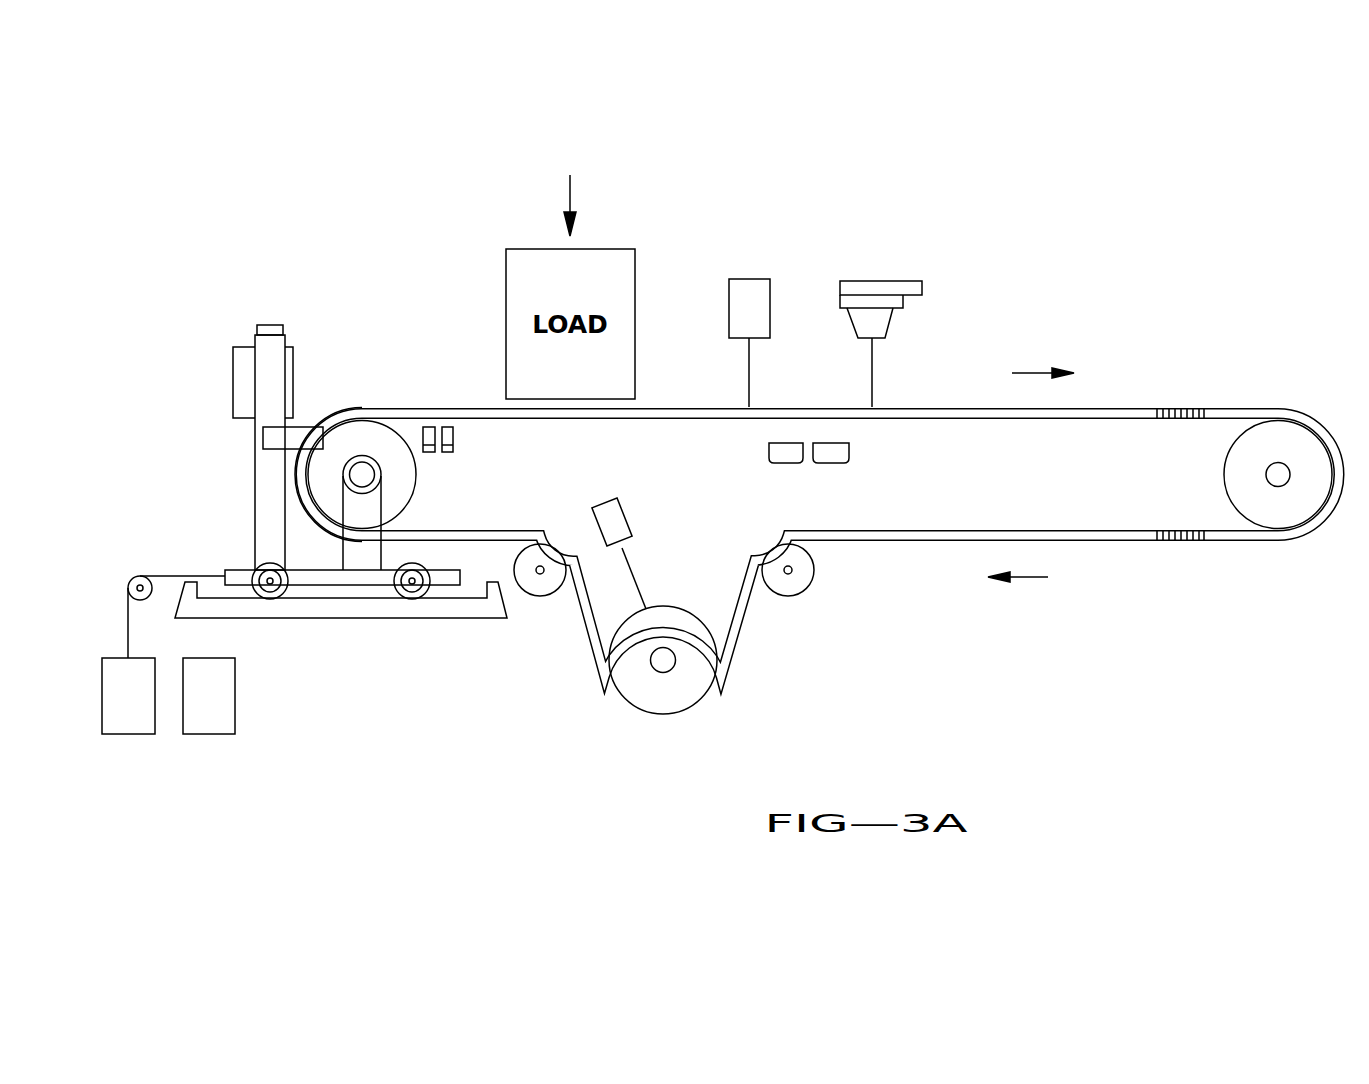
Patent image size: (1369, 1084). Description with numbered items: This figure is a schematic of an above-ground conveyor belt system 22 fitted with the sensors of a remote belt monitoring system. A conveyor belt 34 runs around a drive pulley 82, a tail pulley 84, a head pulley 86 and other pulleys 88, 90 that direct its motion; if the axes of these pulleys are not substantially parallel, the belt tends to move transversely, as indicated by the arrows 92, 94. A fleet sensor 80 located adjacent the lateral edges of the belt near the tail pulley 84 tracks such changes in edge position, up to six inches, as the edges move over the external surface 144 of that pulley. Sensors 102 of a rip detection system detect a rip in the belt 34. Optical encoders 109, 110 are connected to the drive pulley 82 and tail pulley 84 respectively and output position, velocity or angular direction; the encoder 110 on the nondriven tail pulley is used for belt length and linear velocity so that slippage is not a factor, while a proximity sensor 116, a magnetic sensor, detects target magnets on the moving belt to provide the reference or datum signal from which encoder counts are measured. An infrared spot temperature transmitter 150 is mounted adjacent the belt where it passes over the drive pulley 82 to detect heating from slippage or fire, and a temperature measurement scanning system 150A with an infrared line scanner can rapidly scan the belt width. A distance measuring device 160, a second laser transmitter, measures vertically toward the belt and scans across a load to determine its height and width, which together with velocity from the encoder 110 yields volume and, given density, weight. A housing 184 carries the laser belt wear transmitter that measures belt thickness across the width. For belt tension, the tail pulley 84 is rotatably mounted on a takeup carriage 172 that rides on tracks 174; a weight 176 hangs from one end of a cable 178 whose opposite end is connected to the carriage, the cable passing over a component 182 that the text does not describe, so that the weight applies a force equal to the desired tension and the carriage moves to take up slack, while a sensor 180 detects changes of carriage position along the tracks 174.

The conveyor belt system 22 is at (243, 258).
The conveyor belt 34 is at (1133, 407).
The fleet sensor 80 is at (315, 436).
The drive pulley 82 is at (695, 611).
The tail pulley 84 is at (368, 437).
The head pulley 86 is at (1308, 427).
The pulley 88 is at (533, 596).
The pulley 90 is at (810, 588).
The arrow 92 is at (1028, 373).
The arrow 94 is at (1028, 578).
The rip detection sensors 102 is at (790, 463).
The optical encoder 109 is at (652, 670).
The optical encoder 110 is at (364, 478).
The proximity sensor 116 is at (451, 451).
The external surface 144 is at (403, 440).
The infrared spot temperature transmitter 150 is at (624, 517).
The temperature measurement scanning system 150A is at (750, 279).
The distance measuring device 160 is at (885, 281).
The takeup carriage 172 is at (266, 473).
The tracks 174 is at (355, 620).
The weight 176 is at (130, 734).
The cable 178 is at (128, 627).
The sensor 180 is at (212, 734).
The cable pulley 182 is at (148, 578).
The housing 184 is at (243, 367).